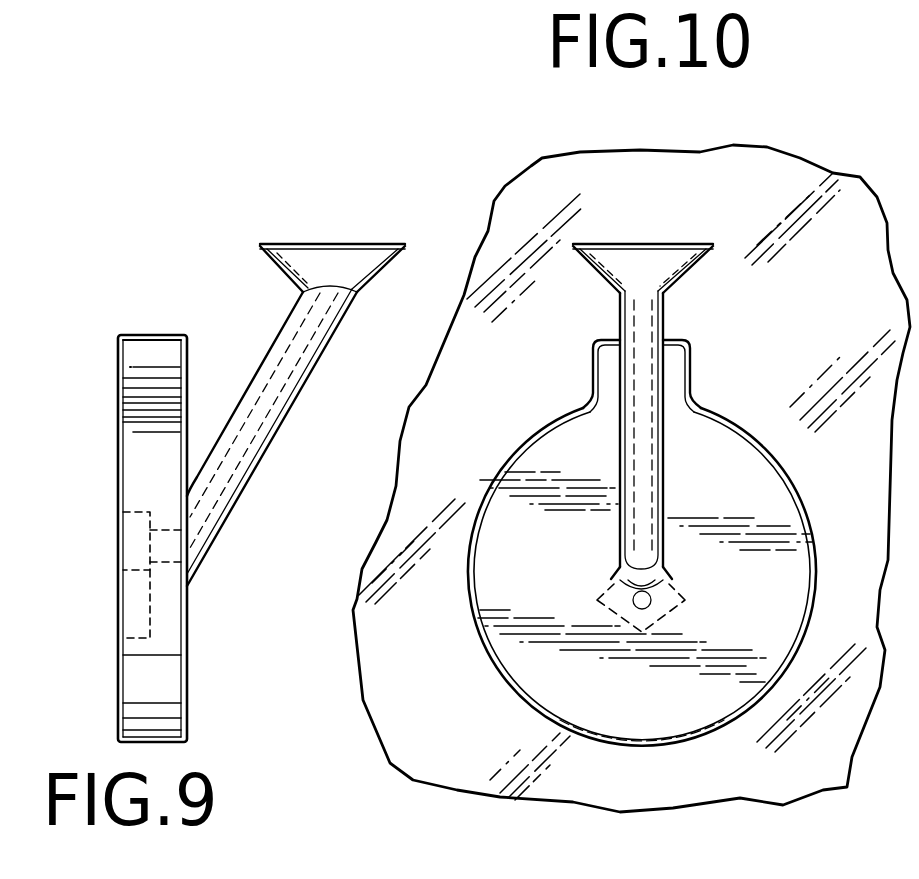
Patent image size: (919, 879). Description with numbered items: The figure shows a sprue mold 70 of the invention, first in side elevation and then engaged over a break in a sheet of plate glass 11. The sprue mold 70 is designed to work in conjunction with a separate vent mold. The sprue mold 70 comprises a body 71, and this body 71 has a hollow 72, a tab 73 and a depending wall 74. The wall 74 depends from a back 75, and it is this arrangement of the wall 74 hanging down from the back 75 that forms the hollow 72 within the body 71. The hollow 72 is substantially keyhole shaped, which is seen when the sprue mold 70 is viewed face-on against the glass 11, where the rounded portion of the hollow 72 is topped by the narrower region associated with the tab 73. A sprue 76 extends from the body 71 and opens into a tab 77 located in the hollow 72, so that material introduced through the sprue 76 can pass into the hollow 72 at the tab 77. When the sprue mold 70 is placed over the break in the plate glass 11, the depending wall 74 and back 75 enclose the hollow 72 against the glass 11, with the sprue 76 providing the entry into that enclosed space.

In FIG. 10, the container wall 11 is at (795, 773).
In FIG. 9, the sprue mold 70 is at (222, 493).
In FIG. 10, the sprue mold 70 is at (637, 550).
In FIG. 9, the body 71 is at (190, 712).
In FIG. 10, the body 71 is at (540, 715).
In FIG. 9, the hollow 72 is at (132, 612).
In FIG. 9, the tab 73 is at (145, 335).
In FIG. 10, the tab 73 is at (670, 358).
In FIG. 9, the depending wall 74 is at (152, 674).
In FIG. 10, the back 75 is at (755, 592).
In FIG. 9, the sprue 76 is at (292, 388).
In FIG. 10, the sprue 76 is at (645, 500).
In FIG. 9, the tab 77 is at (136, 530).